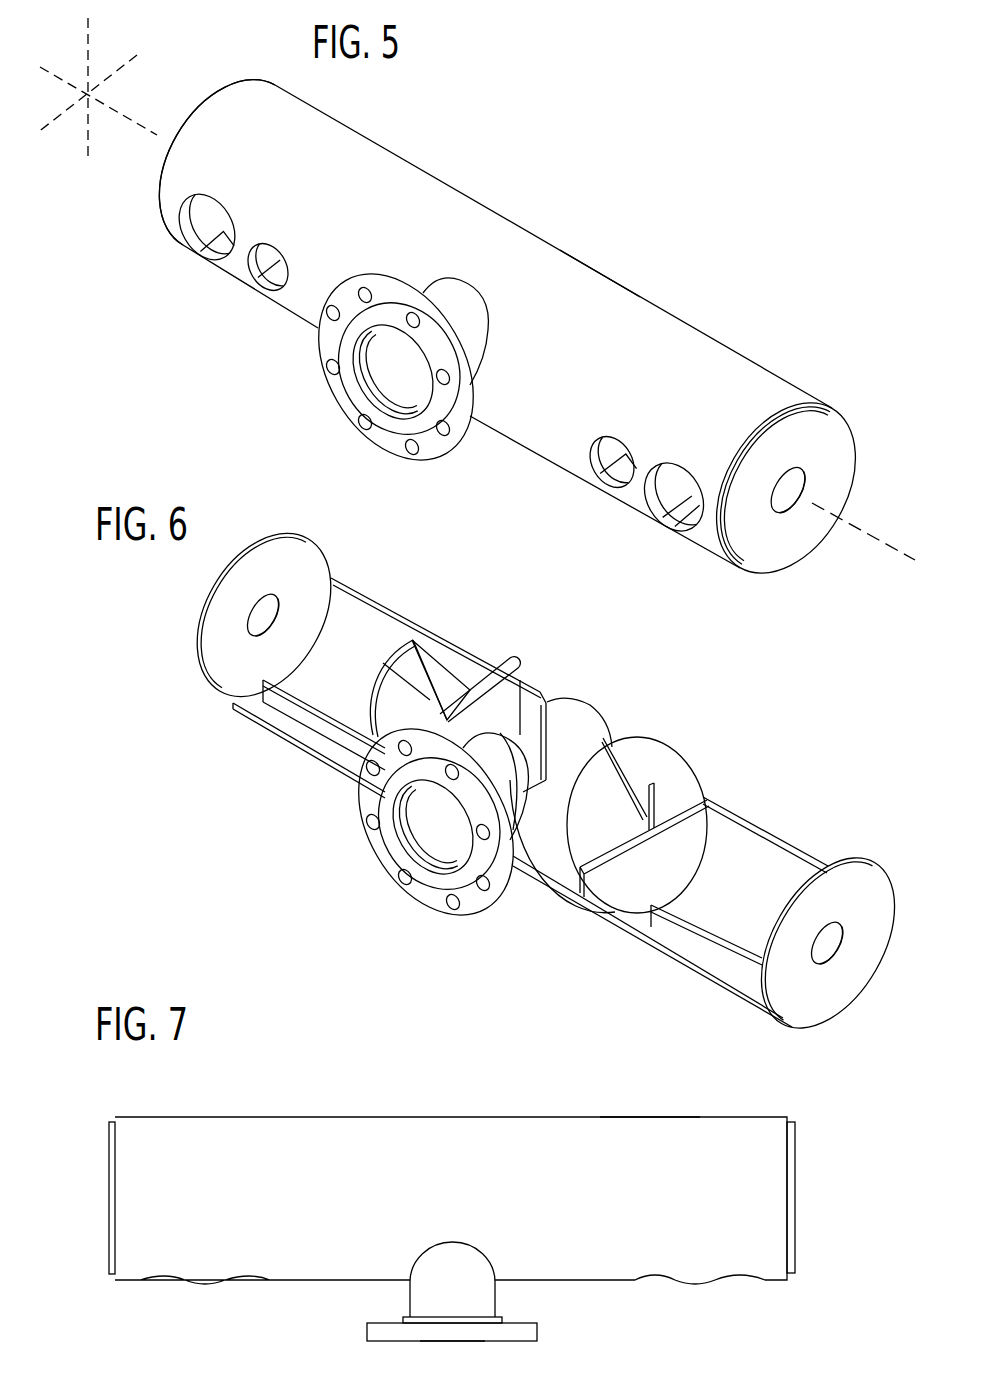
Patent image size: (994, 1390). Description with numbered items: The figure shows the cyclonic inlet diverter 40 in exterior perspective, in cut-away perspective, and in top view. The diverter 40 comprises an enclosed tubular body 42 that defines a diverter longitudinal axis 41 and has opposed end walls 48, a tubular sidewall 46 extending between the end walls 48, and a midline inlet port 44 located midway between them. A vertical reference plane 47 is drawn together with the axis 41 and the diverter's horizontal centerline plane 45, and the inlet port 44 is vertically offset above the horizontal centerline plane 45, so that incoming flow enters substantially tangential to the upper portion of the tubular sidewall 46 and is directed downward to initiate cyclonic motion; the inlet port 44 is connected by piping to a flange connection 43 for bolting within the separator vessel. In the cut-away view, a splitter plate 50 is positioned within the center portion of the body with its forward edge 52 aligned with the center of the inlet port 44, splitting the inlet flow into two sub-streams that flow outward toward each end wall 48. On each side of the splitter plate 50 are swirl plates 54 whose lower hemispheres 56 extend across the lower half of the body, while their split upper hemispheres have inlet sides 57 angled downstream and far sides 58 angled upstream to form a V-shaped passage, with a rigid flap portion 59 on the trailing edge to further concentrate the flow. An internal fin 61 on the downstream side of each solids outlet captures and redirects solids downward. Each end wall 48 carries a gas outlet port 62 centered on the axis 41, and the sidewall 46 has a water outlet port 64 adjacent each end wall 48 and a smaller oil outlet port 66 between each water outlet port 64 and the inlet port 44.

In FIG. 5, the cyclonic inlet diverter 40 is at (707, 153).
In FIG. 7, the cyclonic inlet diverter 40 is at (466, 1085).
In FIG. 5, the diverter longitudinal axis 41 is at (125, 115).
In FIG. 5, the tubular body 42 is at (497, 185).
In FIG. 7, the tubular body 42 is at (330, 1105).
In FIG. 5, the flange connection 43 is at (378, 275).
In FIG. 6, the flange connection 43 is at (430, 897).
In FIG. 7, the flange connection 43 is at (538, 1326).
In FIG. 5, the midline inlet port 44 is at (398, 363).
In FIG. 6, the midline inlet port 44 is at (437, 820).
In FIG. 7, the midline inlet port 44 is at (455, 1345).
In FIG. 5, the horizontal centerline plane 45 is at (60, 117).
In FIG. 5, the tubular sidewall 46 is at (612, 277).
In FIG. 6, the tubular sidewall 46 is at (775, 830).
In FIG. 7, the tubular sidewall 46 is at (645, 1115).
In FIG. 5, the axis 47 is at (87, 36).
In FIG. 5, the end walls 48 is at (829, 449).
In FIG. 6, the end walls 48 is at (298, 578).
In FIG. 7, the end walls 48 is at (110, 1188).
In FIG. 6, the splitter plate 50 is at (580, 705).
In FIG. 6, the forward edge 52 is at (540, 755).
In FIG. 6, the swirl plates 54 is at (541, 776).
In FIG. 6, the lower hemispheres 56 is at (670, 858).
In FIG. 6, the inlet sides 57 is at (387, 700).
In FIG. 6, the far sides 58 is at (512, 673).
In FIG. 6, the rigid flap portion 59 is at (405, 655).
In FIG. 6, the internal fin 61 is at (307, 715).
In FIG. 5, the gas outlet port 62 is at (800, 498).
In FIG. 6, the gas outlet port 62 is at (263, 612).
In FIG. 5, the water outlet port 64 is at (213, 218).
In FIG. 5, the oil outlet port 66 is at (275, 263).